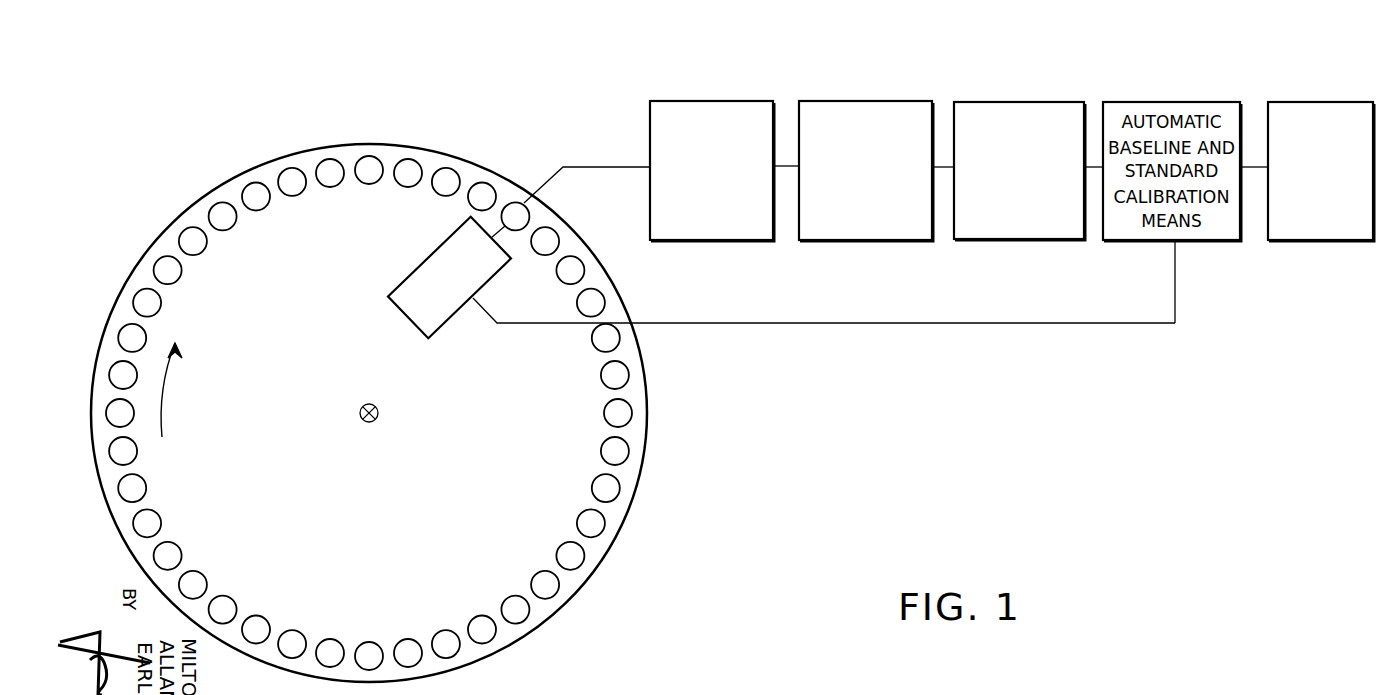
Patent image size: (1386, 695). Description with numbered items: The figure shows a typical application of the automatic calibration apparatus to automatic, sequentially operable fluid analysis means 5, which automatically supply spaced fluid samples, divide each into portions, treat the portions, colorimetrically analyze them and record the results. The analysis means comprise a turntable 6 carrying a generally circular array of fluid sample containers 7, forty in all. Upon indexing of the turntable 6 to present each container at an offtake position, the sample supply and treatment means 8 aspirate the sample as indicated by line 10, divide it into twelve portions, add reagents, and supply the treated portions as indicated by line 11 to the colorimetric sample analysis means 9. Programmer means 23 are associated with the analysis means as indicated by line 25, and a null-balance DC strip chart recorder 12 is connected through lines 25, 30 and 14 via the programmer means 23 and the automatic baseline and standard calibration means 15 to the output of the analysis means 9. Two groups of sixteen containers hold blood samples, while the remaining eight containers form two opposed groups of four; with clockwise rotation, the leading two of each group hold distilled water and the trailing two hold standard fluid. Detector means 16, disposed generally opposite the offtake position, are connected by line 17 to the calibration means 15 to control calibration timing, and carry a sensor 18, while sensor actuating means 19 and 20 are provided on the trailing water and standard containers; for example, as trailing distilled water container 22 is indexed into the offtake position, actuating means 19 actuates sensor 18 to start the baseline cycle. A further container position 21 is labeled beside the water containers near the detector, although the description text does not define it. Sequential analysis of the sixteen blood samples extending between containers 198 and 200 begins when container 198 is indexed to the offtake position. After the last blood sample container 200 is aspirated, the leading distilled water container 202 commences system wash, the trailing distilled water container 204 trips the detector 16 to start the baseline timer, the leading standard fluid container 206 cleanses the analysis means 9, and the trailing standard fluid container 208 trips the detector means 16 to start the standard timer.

The automatic sequentially operable fluid analysis means 5 is at (800, 93).
The turntable 6 is at (606, 557).
The fluid sample containers 7 is at (233, 223).
The sample supply and treatment means 8 is at (690, 100).
The colorimetric sample analysis means 9 is at (863, 100).
The line 10 is at (605, 165).
The line 11 is at (787, 167).
The strip chart recorder 12 is at (1333, 102).
The line 14 is at (1260, 173).
The automatic baseline and standard calibration means 15 is at (1205, 240).
The detector means 16 is at (457, 317).
The line 17 is at (970, 325).
The sensor 18 is at (466, 223).
The sensor actuating means 19 is at (580, 311).
The sensor actuating means 20 is at (536, 253).
The wash container position 21 is at (620, 340).
The trailing distilled water container 22 is at (604, 298).
The programmer means 23 is at (1023, 102).
The line 25 is at (945, 167).
The line 30 is at (1093, 165).
The blood sample container 198 is at (517, 202).
The blood sample container 200 is at (137, 448).
The leading distilled water container 202 is at (96, 488).
The trailing distilled water container 204 is at (161, 520).
The leading standard fluid container 206 is at (153, 558).
The trailing standard fluid container 208 is at (206, 580).